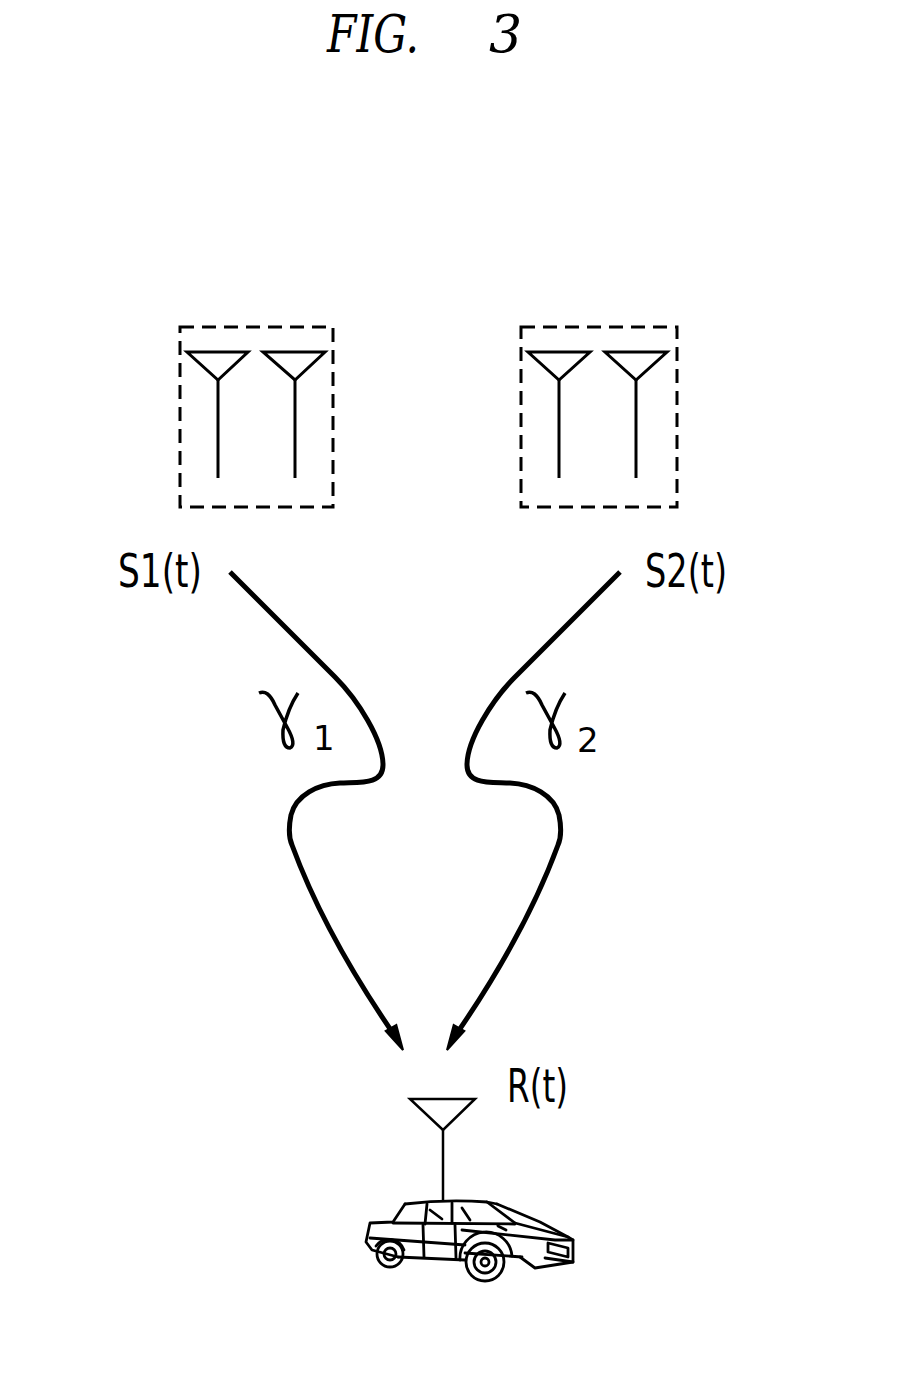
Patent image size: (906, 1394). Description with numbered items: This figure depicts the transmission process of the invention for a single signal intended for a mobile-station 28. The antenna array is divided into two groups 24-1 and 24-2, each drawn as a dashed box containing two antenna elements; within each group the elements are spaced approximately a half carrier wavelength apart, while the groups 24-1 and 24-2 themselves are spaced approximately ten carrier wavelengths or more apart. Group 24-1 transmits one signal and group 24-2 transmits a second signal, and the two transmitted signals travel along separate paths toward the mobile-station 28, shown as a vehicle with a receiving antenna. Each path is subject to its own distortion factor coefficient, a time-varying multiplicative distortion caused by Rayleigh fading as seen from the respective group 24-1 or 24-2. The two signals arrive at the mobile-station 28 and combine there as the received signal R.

The antenna group 24-1 is at (205, 327).
The antenna group 24-2 is at (653, 327).
The mobile-station 28 is at (433, 1257).